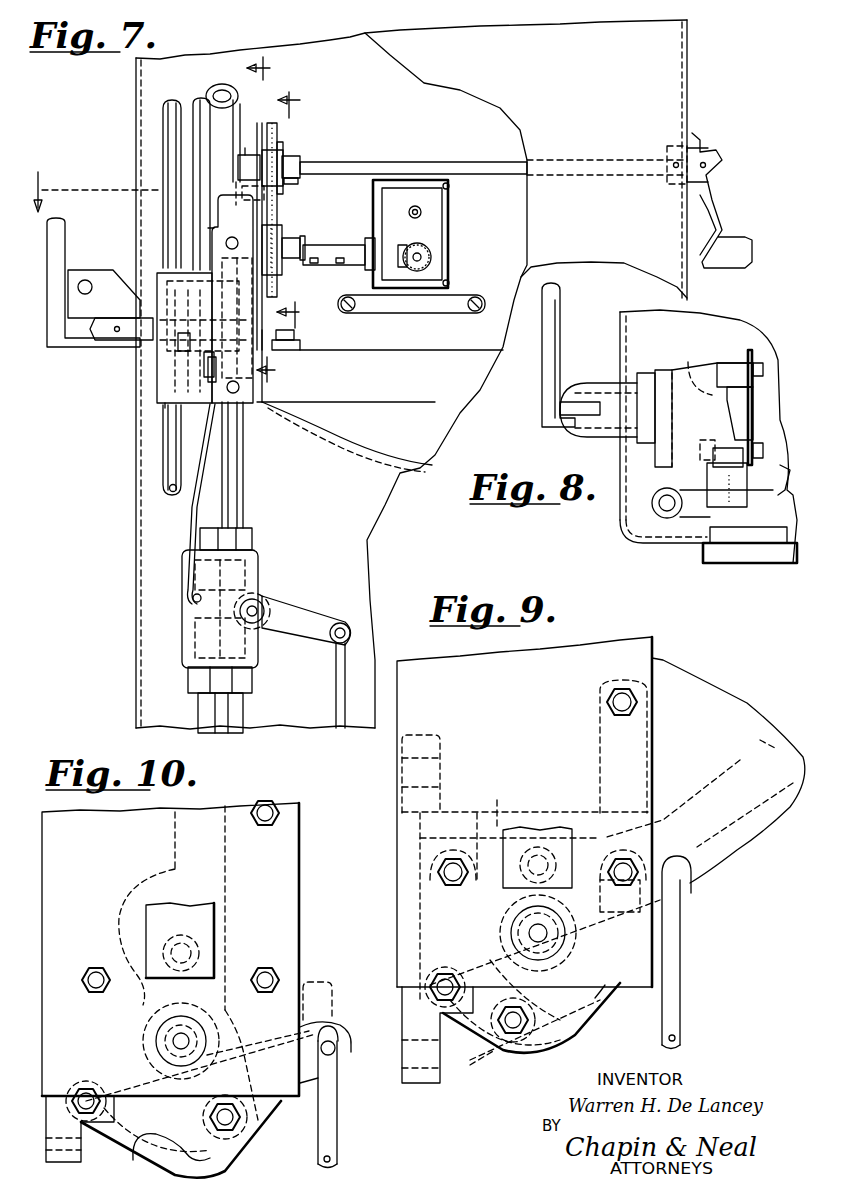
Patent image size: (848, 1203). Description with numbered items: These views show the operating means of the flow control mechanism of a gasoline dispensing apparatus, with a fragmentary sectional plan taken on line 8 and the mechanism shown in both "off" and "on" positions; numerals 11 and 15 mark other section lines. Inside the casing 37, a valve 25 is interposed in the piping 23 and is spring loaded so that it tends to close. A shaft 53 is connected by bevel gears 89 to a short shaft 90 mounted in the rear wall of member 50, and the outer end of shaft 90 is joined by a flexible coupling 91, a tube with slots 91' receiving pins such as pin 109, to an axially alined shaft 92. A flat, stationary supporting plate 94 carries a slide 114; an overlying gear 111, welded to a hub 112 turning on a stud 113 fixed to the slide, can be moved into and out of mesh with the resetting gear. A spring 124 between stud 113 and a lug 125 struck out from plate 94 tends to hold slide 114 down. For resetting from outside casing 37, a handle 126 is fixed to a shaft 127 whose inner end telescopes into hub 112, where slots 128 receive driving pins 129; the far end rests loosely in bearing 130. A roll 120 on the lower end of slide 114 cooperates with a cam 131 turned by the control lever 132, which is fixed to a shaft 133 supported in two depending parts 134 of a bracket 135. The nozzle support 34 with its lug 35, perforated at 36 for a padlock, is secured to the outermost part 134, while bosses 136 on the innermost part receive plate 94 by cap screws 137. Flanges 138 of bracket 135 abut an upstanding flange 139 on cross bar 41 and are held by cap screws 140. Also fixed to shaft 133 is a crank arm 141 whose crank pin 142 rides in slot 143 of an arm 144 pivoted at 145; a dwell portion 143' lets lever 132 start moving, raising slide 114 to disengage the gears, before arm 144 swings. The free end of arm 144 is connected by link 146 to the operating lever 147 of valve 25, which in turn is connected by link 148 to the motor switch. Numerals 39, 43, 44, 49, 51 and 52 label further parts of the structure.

In FIG. 7, the section line 8— 8 is at (87, 192).
In FIG. 7, the direction arrow 11 is at (302, 202).
In FIG. 7, the direction arrow 15 is at (273, 218).
In FIG. 7, the piping 23 is at (212, 90).
In FIG. 7, the valve 25 is at (248, 576).
In FIG. 8, the shelf-like support 34 is at (600, 438).
In FIG. 7, the lug 35 is at (80, 269).
In FIG. 8, the lug 35 is at (585, 404).
In FIG. 7, the perforation 36 is at (89, 279).
In FIG. 7, the casing 37 is at (136, 580).
In FIG. 8, the casing 37 is at (640, 538).
In FIG. 9, the casing 37 is at (757, 845).
In FIG. 7, the rod 39 is at (170, 468).
In FIG. 8, the rod 39 is at (666, 520).
In FIG. 7, the cross bar 41 is at (380, 366).
In FIG. 8, the cross bar 41 is at (700, 505).
In FIG. 8, the base 43 is at (740, 555).
In FIG. 7, the guide arc 44 is at (347, 437).
In FIG. 7, the nut 49 is at (290, 351).
In FIG. 8, the nut 49 is at (785, 467).
In FIG. 7, the member 50 is at (376, 184).
In FIG. 7, the casing 51 is at (445, 236).
In FIG. 7, the boss 52 is at (408, 204).
In FIG. 7, the shaft 53 is at (432, 258).
In FIG. 7, the bevel gears 89 is at (427, 272).
In FIG. 7, the short shaft 90 is at (402, 250).
In FIG. 7, the flexible coupling 91 is at (363, 244).
In FIG. 7, the slots 91' is at (354, 273).
In FIG. 7, the second shaft 92 is at (311, 264).
In FIG. 7, the supporting plate 94 is at (257, 131).
In FIG. 8, the supporting plate 94 is at (752, 355).
In FIG. 9, the supporting plate 94 is at (524, 812).
In FIG. 10, the supporting plate 94 is at (297, 924).
In FIG. 7, the pin 109 is at (311, 245).
In FIG. 7, the gear 111 is at (278, 148).
In FIG. 7, the hub 112 is at (298, 181).
In FIG. 7, the stud 113 is at (238, 164).
In FIG. 7, the slide 114 is at (267, 125).
In FIG. 9, the slide 114 is at (525, 830).
In FIG. 10, the slide 114 is at (198, 905).
In FIG. 7, the roll 120 is at (282, 276).
In FIG. 9, the roll 120 is at (540, 850).
In FIG. 10, the roll 120 is at (200, 956).
In FIG. 7, the spring 124 is at (240, 172).
In FIG. 7, the lug 125 is at (264, 210).
In FIG. 7, the handle 126 is at (726, 220).
In FIG. 7, the shaft 127 is at (488, 162).
In FIG. 7, the slots 128 is at (301, 163).
In FIG. 7, the driving pins 129 is at (285, 160).
In FIG. 7, the bearing 130 is at (703, 150).
In FIG. 7, the cam 131 is at (239, 322).
In FIG. 9, the cam 131 is at (510, 912).
In FIG. 10, the cam 131 is at (138, 1030).
In FIG. 7, the control lever 132 is at (53, 224).
In FIG. 8, the control lever 132 is at (545, 371).
In FIG. 9, the control lever 132 is at (752, 760).
In FIG. 10, the control lever 132 is at (228, 861).
In FIG. 7, the shaft 133 is at (110, 341).
In FIG. 9, the shaft 133 is at (518, 935).
In FIG. 10, the shaft 133 is at (196, 1008).
In FIG. 7, the depending parts 134 is at (170, 285).
In FIG. 8, the depending parts 134 is at (688, 362).
In FIG. 9, the depending parts 134 is at (650, 935).
In FIG. 7, the bracket 135 is at (218, 240).
In FIG. 8, the bracket 135 is at (695, 415).
In FIG. 9, the bracket 135 is at (479, 802).
In FIG. 8, the bosses 136 is at (722, 440).
In FIG. 9, the bosses 136 is at (600, 740).
In FIG. 8, the cap screws 137 is at (760, 370).
In FIG. 9, the cap screws 137 is at (612, 700).
In FIG. 10, the cap screws 137 is at (268, 806).
In FIG. 8, the flanges 138 is at (712, 478).
In FIG. 9, the flanges 138 is at (440, 716).
In FIG. 10, the flanges 138 is at (54, 1156).
In FIG. 7, the upstanding flange 139 is at (215, 232).
In FIG. 8, the upstanding flange 139 is at (720, 500).
In FIG. 7, the cap screws 140 is at (240, 395).
In FIG. 8, the cap screws 140 is at (741, 463).
In FIG. 7, the crank arm 141 is at (208, 384).
In FIG. 9, the crank arm 141 is at (555, 1050).
In FIG. 10, the crank arm 141 is at (232, 1060).
In FIG. 9, the crank pin 142 is at (518, 1042).
In FIG. 10, the crank pin 142 is at (210, 1117).
In FIG. 9, the slot 143 is at (527, 1014).
In FIG. 10, the slot 143 is at (187, 1144).
In FIG. 9, the dwell portion 143' is at (472, 1070).
In FIG. 10, the dwell portion 143' is at (145, 1157).
In FIG. 7, the arm 144 is at (180, 407).
In FIG. 9, the arm 144 is at (585, 1020).
In FIG. 10, the arm 144 is at (258, 1125).
In FIG. 9, the pivot 145 is at (430, 985).
In FIG. 10, the pivot 145 is at (86, 1087).
In FIG. 7, the link 146 is at (205, 495).
In FIG. 9, the link 146 is at (681, 1021).
In FIG. 10, the link 146 is at (338, 1116).
In FIG. 7, the operating lever 147 is at (301, 608).
In FIG. 7, the link 148 is at (336, 678).